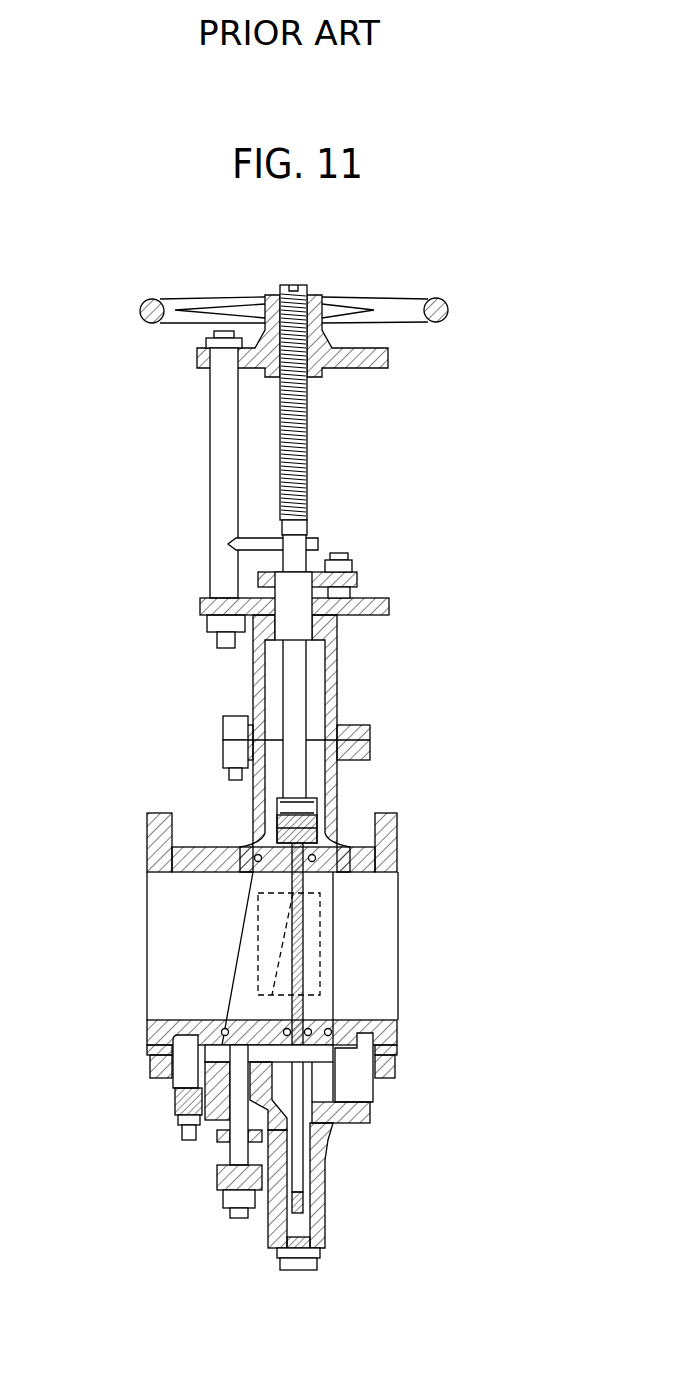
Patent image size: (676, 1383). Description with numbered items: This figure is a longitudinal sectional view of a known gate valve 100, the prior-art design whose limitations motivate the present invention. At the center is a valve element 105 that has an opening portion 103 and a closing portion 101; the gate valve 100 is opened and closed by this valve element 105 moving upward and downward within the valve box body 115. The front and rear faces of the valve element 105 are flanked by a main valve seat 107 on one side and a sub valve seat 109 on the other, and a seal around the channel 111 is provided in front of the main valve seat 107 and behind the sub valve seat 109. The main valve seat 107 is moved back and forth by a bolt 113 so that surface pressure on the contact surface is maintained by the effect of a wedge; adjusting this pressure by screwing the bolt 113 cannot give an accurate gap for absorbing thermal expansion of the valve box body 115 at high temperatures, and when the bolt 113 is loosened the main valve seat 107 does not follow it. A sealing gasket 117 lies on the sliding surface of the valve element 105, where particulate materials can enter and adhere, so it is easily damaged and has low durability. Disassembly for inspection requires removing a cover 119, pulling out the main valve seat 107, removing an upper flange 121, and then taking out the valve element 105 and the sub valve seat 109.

The gate valve 100 is at (420, 555).
The closing portion 101 is at (300, 1011).
The opening portion 103 is at (305, 1095).
The valve element 105 is at (305, 902).
The main valve seat 107 is at (240, 915).
The sub valve seat 109 is at (308, 867).
The channel 111 is at (173, 953).
The bolt 113 is at (230, 1153).
The valve box body 115 is at (336, 777).
The sealing gasket 117 is at (258, 850).
The cover 119 is at (326, 1198).
The upper flange 121 is at (338, 673).